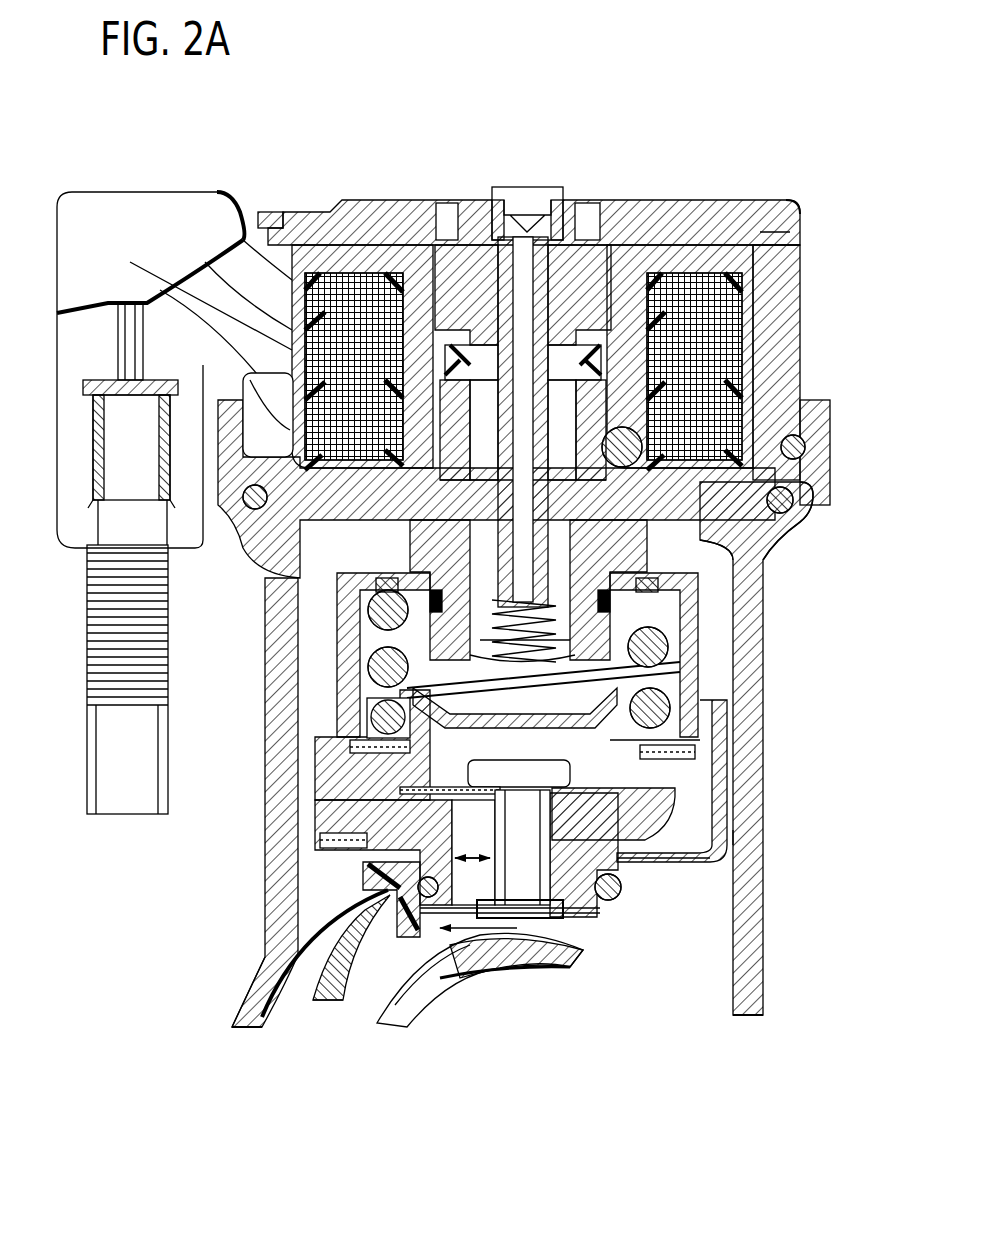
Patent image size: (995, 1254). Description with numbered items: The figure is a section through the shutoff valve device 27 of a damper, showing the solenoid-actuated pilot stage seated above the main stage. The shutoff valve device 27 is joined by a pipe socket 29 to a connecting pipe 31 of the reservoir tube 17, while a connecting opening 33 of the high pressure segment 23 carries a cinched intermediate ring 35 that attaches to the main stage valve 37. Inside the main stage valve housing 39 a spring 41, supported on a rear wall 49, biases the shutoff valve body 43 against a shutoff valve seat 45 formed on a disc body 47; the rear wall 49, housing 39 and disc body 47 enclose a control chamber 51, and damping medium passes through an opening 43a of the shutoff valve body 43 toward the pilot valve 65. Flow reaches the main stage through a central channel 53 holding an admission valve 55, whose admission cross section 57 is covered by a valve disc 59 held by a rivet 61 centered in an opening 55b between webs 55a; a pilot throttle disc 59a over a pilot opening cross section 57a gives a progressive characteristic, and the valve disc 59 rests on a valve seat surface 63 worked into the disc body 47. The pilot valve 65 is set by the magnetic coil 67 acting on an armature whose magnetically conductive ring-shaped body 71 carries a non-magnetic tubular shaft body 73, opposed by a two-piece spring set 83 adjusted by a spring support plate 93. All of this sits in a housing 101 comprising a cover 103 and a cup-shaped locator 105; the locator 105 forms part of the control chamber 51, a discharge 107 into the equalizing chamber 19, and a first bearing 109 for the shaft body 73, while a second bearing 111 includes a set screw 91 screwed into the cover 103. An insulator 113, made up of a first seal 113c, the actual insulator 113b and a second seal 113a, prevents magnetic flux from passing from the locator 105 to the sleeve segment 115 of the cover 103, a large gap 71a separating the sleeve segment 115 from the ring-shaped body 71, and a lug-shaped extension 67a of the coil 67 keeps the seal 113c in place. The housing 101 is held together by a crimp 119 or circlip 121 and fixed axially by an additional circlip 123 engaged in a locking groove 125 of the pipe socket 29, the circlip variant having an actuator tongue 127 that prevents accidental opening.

The reservoir tube 17 is at (234, 1020).
The equalizing chamber 19 is at (307, 978).
The high pressure segment 23 is at (356, 977).
The shutoff valve device 27 is at (128, 629).
The pipe socket 29 is at (254, 700).
The connecting pipe 31 is at (245, 960).
The connecting opening 33 is at (330, 977).
The cinched intermediate ring 35 is at (395, 935).
The main stage valve 37 is at (333, 668).
The main stage valve housing 39 is at (370, 622).
The spring 41 is at (345, 608).
The shutoff valve body 43 is at (375, 690).
The opening 43a is at (662, 712).
The shutoff valve seat 45 is at (316, 756).
The disc body 47 is at (335, 770).
The rear wall 49 is at (370, 560).
The control chamber 51 is at (672, 672).
The central channel 53 is at (465, 935).
The admission valve 55 is at (747, 753).
The web 55a is at (627, 865).
The opening 55b is at (697, 880).
The admission cross section 57 is at (472, 852).
The pilot opening cross section 57a is at (337, 822).
The valve disc 59 is at (612, 776).
The pilot throttle disc 59a is at (568, 920).
The rivet 61 is at (622, 908).
The valve seat surface 63 is at (692, 812).
The pilot valve 65 is at (736, 580).
The magnetic coil 67 is at (222, 193).
The lug-shaped extension 67a is at (772, 500).
The ring-shaped body 71 is at (683, 340).
The gap 71a is at (374, 240).
The shaft body 73 is at (765, 532).
The spring set 83 is at (655, 612).
The set screw 91 is at (470, 240).
The spring support plate 93 is at (684, 641).
The housing 101 is at (817, 328).
The cover 103 is at (662, 200).
The cup-shaped locator 105 is at (790, 288).
The discharge 107 is at (268, 550).
The first bearing 109 is at (745, 560).
The second bearing 111 is at (590, 262).
The insulator 113 is at (662, 412).
The second seal 113a is at (209, 265).
The actual insulator 113b is at (132, 264).
The first seal 113c is at (135, 300).
The sleeve segment 115 is at (790, 232).
The crimp 119 is at (802, 207).
The circlip 121 is at (276, 212).
The additional circlip 123 is at (812, 432).
The locking groove 125 is at (800, 456).
The actuator tongue 127 is at (217, 387).